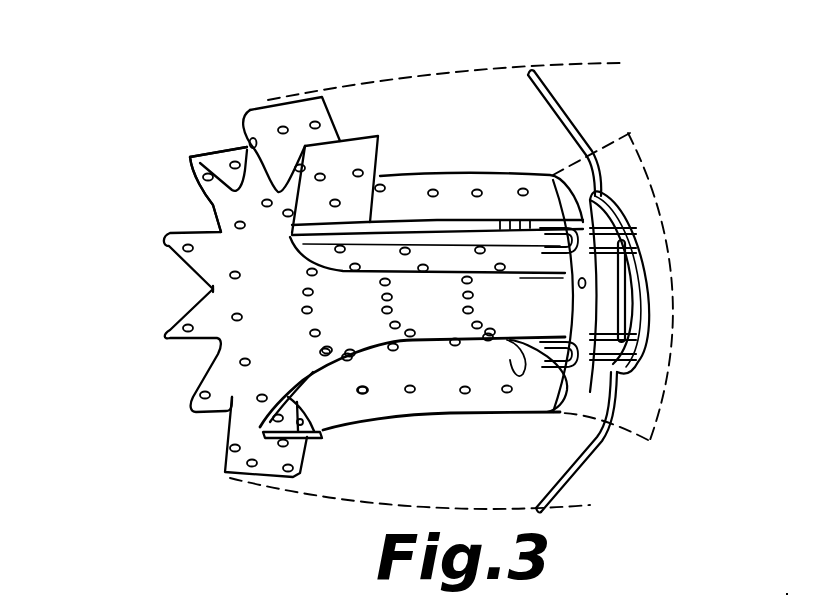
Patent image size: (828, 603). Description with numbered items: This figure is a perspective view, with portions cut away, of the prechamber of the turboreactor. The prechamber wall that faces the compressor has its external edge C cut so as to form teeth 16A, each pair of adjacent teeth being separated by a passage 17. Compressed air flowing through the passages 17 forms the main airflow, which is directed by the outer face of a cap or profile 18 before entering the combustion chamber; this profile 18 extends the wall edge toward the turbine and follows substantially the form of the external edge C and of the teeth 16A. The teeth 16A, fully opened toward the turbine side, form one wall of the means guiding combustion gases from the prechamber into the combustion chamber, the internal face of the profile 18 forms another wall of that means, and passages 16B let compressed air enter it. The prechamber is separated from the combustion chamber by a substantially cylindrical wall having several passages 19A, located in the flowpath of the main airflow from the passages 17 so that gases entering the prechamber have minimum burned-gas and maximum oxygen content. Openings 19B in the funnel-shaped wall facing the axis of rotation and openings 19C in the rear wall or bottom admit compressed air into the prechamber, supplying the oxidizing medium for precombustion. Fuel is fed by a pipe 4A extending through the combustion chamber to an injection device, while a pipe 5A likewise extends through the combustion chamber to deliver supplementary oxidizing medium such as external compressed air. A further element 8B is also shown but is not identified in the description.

The passage 17 is at (190, 353).
The teeth 16A is at (213, 193).
The passages 16B is at (188, 394).
The cap or profile 18 is at (273, 110).
The external edge C is at (200, 303).
The passages 19A is at (433, 193).
The openings or apertures 19B is at (385, 310).
The openings or apertures 19C is at (590, 285).
The strut 8B is at (586, 307).
The pipe 4A is at (572, 118).
The pipe 5A is at (586, 457).